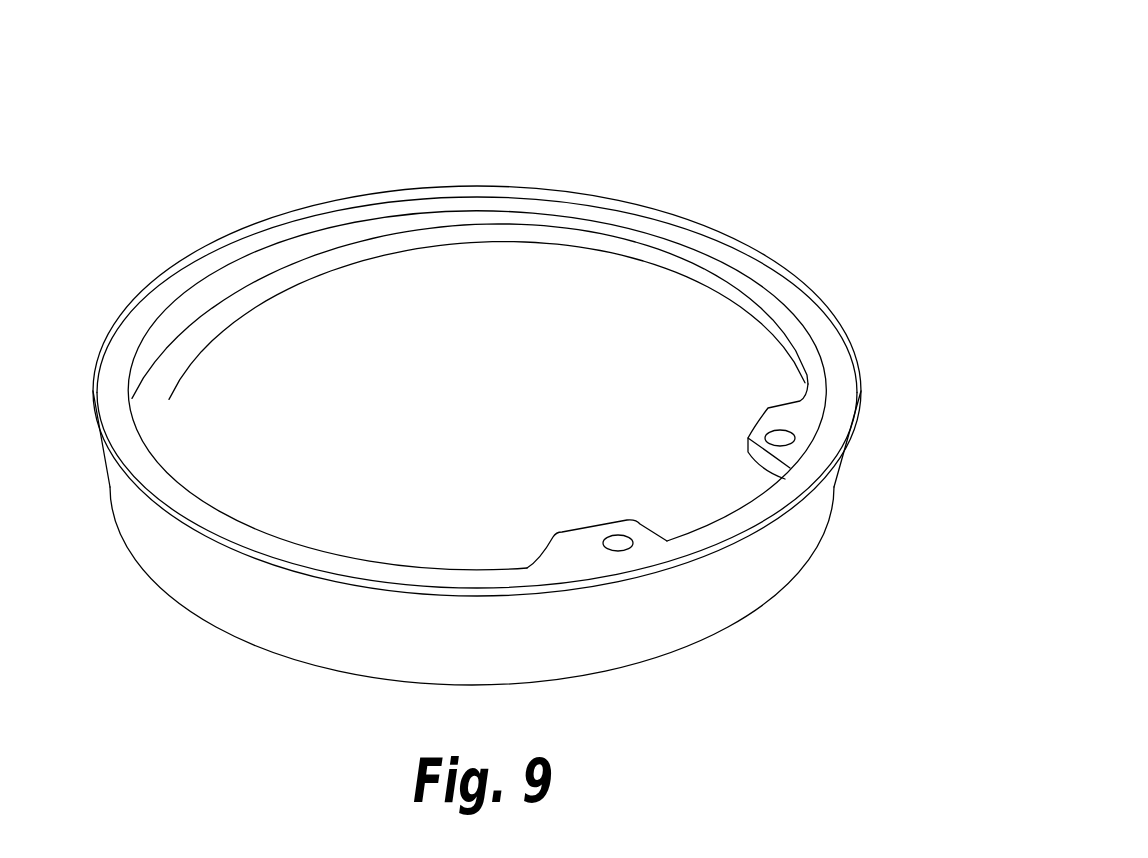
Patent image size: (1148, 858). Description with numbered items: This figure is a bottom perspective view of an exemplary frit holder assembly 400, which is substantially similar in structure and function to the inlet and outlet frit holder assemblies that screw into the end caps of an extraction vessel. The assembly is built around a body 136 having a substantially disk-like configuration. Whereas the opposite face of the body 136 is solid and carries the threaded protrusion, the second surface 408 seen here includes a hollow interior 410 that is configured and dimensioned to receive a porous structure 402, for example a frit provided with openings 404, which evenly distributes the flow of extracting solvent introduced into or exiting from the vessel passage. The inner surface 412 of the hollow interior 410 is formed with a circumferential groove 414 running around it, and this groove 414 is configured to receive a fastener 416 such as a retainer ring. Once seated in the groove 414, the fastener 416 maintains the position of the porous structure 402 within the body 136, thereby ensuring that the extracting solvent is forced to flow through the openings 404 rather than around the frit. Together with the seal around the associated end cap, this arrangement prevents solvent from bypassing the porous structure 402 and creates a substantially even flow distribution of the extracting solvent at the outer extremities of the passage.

The frit holder assembly 400 is at (514, 354).
The porous structure 402 is at (673, 333).
The openings 404 is at (753, 375).
The second surface 408 is at (456, 188).
The hollow interior 410 is at (506, 195).
The inner surface 412 is at (197, 248).
The circumferential groove 414 is at (638, 230).
The fastener 416 is at (310, 256).
The body 136 is at (742, 573).